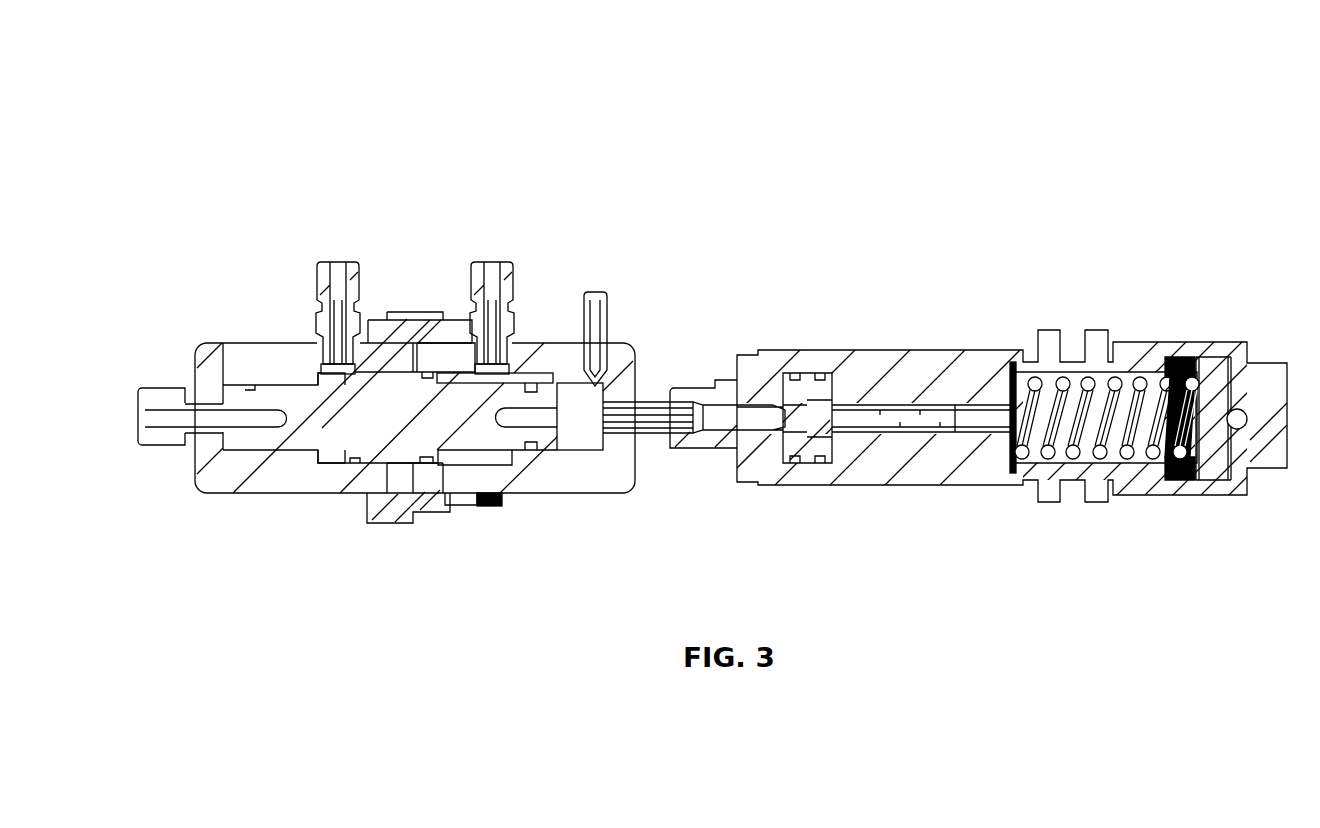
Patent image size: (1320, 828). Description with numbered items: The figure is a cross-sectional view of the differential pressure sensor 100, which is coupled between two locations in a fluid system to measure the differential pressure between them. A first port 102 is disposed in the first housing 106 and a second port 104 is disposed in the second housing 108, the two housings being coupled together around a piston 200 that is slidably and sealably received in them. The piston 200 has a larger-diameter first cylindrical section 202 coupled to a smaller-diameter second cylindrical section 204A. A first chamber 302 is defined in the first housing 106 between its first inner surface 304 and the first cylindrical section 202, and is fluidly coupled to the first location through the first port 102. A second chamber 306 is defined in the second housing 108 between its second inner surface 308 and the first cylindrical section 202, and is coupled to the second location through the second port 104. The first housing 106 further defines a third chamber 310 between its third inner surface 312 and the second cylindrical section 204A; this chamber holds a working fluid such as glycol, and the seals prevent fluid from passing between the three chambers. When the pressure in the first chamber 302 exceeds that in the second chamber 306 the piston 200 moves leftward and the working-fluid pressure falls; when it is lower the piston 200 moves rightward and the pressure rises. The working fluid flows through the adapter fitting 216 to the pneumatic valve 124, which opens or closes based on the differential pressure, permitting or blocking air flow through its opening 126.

The differential pressure sensor 100 is at (201, 118).
The first port 102 is at (493, 256).
The second port 104 is at (337, 256).
The first housing 106 is at (512, 497).
The second housing 108 is at (240, 495).
The pneumatic valve 124 is at (1142, 345).
The opening 126 is at (1073, 505).
The piston 200 is at (222, 397).
The first cylindrical section 202 is at (394, 500).
The second cylindrical section 204A is at (553, 453).
The adapter fitting 216 is at (651, 438).
The first chamber 302 is at (452, 470).
The first inner surface 304 is at (514, 375).
The second chamber 306 is at (333, 467).
The second inner surface 308 is at (318, 376).
The third chamber 310 is at (578, 458).
The third inner surface 312 is at (610, 382).